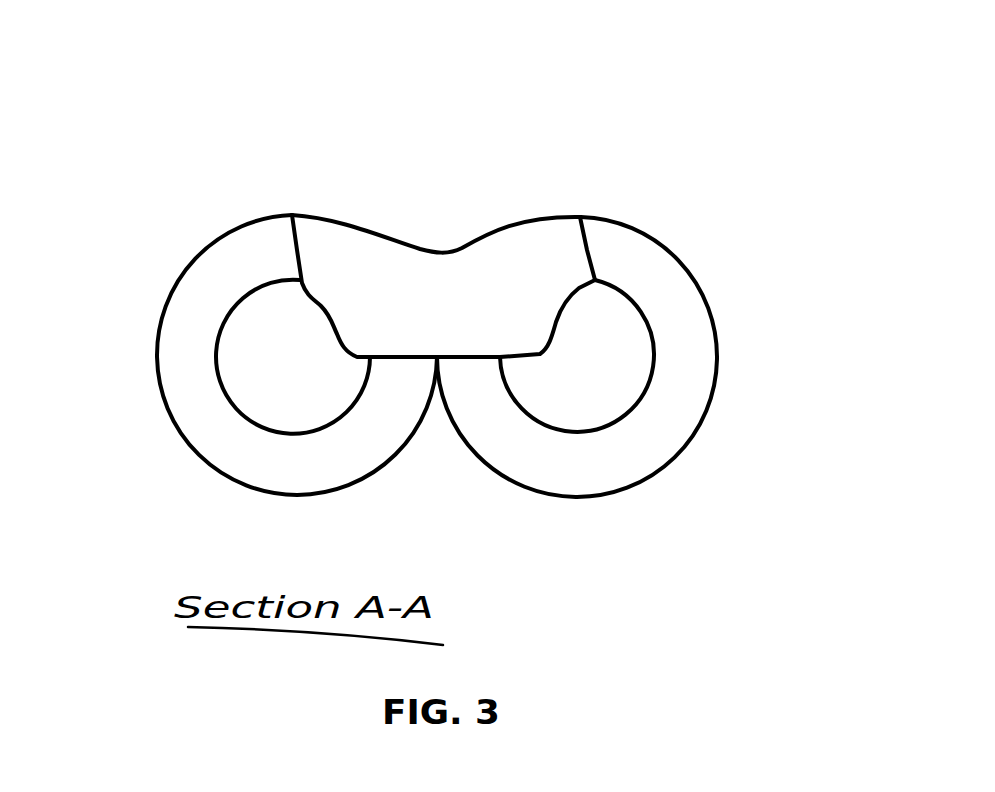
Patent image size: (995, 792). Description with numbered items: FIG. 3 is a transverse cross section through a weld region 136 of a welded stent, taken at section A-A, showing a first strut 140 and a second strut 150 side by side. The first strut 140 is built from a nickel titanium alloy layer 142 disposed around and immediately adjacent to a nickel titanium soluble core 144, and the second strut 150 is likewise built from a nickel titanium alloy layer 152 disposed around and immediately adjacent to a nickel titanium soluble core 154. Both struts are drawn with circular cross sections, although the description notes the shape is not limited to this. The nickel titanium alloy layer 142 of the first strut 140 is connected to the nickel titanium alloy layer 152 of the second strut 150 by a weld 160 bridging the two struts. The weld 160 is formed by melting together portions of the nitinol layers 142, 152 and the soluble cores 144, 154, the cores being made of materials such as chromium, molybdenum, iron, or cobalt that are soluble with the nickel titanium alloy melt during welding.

The assembly section 136 is at (579, 108).
The first strut 140 is at (190, 220).
The nickel titanium alloy layer 142 is at (182, 378).
The nickel titanium soluble core 144 is at (285, 383).
The second strut 150 is at (656, 223).
The nickel titanium alloy layer 152 is at (547, 463).
The nickel titanium soluble core 154 is at (600, 372).
The weld 160 is at (370, 255).